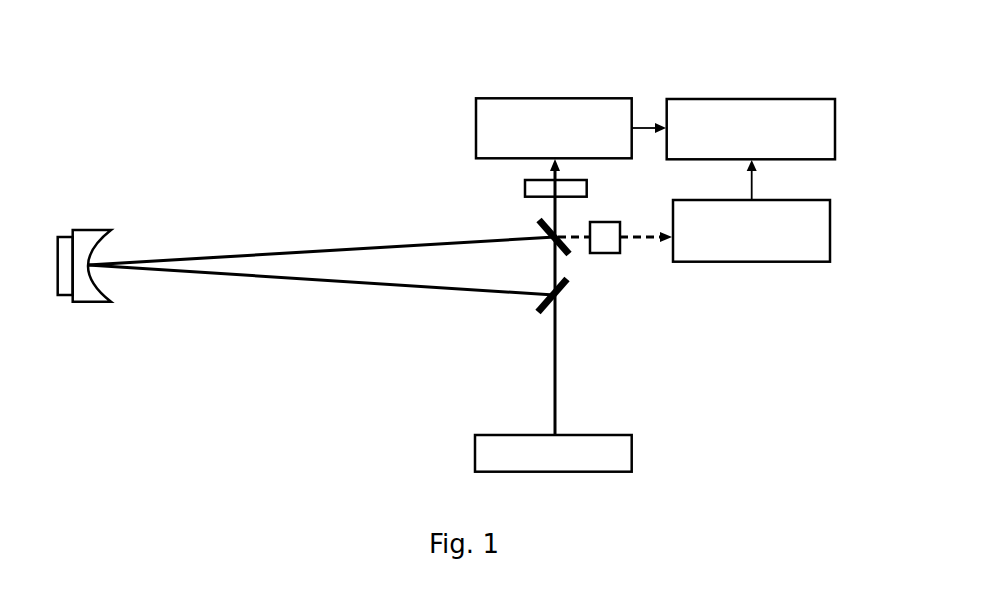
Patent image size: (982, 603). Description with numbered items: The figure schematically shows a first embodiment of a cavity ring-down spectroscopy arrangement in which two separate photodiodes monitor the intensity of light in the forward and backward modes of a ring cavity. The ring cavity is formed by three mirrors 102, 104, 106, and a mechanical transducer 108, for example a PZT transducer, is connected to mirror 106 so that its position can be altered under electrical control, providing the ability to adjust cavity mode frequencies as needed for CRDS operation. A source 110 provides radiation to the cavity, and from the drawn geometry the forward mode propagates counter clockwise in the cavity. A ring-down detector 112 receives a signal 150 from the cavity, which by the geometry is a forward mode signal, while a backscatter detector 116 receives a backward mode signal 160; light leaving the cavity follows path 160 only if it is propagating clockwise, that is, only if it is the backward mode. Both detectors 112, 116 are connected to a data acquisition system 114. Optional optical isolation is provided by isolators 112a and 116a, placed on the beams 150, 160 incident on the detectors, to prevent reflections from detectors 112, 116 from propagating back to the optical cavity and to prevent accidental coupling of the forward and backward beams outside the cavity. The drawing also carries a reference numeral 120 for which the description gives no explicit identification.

The mirror 102 is at (567, 285).
The mirror 104 is at (538, 227).
The mirror 106 is at (95, 229).
The mechanical transducer 108 is at (66, 303).
The source 110 is at (632, 444).
The ring-down detector 112 is at (562, 98).
The isolator 112a is at (525, 187).
The data acquisition system 114 is at (765, 99).
The backscatter detector 116 is at (758, 262).
The isolator 116a is at (620, 254).
The laser beam 120 is at (324, 297).
The signal 150 is at (558, 212).
The backward mode signal 160 is at (643, 239).